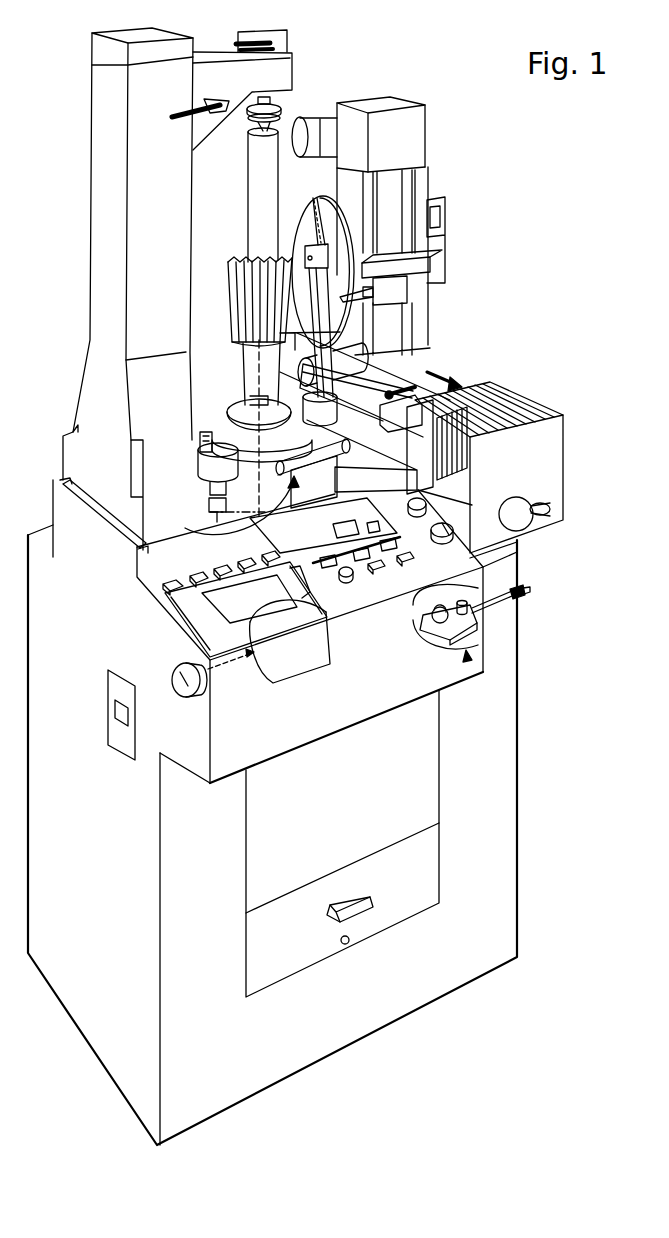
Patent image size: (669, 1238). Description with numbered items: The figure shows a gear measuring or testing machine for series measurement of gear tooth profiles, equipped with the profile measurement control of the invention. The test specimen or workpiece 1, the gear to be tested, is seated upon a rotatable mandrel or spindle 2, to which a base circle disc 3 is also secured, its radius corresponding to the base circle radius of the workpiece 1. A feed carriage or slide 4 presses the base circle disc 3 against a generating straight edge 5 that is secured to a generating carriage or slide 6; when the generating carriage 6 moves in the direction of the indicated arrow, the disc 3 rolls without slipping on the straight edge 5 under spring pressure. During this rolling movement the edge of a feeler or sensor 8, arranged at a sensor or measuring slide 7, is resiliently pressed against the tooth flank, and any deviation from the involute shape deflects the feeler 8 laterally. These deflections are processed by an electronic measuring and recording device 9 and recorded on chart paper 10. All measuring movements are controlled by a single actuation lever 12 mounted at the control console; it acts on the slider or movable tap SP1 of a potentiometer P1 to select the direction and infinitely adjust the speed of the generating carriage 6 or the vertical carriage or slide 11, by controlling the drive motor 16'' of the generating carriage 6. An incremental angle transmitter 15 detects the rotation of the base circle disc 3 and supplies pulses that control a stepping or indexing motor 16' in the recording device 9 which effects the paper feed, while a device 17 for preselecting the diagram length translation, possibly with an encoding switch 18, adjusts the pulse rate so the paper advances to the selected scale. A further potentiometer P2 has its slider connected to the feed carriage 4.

The test or workpiece 1 is at (240, 274).
The rotatable mandrel or spindle 2 is at (250, 352).
The base circle disc 3 is at (230, 417).
The feed carriage or slide 4 is at (88, 460).
The generating straight edge 5 is at (354, 400).
The generating carriage or slide 6 is at (477, 381).
The sensor or measuring slide 7 is at (432, 263).
The feeler or sensor 8 is at (404, 300).
The electronic measuring and recording device 9 is at (183, 605).
The diagram or chart paper 10 is at (290, 665).
The vertical carriage or slide 11 is at (424, 188).
The actuation lever 12 is at (530, 589).
The incremental angle transmitter 15 is at (210, 463).
The stepping or indexing motor 16' is at (181, 706).
The drive motor 16'' is at (234, 386).
The device for preselecting the diagram length translation 17 is at (377, 574).
The encoding or coding switch 18 is at (358, 566).
The potentiometer P1 is at (467, 655).
The further potentiometer P2 is at (254, 490).
The slider or movable tap SP1 is at (438, 622).